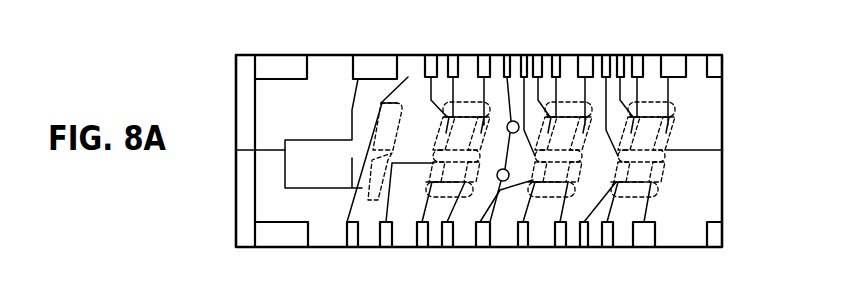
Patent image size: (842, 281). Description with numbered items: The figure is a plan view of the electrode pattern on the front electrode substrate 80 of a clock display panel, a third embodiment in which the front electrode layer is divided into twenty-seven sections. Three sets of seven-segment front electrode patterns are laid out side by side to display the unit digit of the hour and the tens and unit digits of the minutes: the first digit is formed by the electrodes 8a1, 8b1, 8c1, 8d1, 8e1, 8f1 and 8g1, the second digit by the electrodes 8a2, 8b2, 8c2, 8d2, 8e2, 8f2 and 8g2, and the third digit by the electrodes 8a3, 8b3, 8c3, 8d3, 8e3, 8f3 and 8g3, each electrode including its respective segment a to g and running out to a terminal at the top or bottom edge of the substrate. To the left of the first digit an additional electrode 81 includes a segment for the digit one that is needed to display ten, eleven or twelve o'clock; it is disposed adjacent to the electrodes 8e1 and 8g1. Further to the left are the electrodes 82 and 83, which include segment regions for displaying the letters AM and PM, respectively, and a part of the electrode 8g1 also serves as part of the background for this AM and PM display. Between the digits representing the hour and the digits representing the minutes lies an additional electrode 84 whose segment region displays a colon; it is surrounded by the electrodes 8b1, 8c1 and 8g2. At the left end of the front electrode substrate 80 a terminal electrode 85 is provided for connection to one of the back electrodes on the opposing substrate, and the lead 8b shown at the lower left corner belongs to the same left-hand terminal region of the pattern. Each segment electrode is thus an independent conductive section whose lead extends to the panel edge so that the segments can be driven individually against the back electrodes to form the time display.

The front electrode substrate 80 is at (760, 103).
The terminal electrode 85 is at (239, 66).
The common lead 8b is at (245, 233).
The AM display electrode 82 is at (327, 73).
The PM display electrode 83 is at (330, 240).
The additional electrode for digit "1" 81 is at (374, 240).
The colon electrode 84 is at (515, 63).
The segment g electrode of first digit 8g1 is at (405, 77).
The segment f electrode of first digit 8f1 is at (440, 67).
The segment a electrode of first digit 8a1 is at (465, 67).
The segment b electrode of first digit 8b1 is at (496, 67).
The segment e electrode of first digit 8e1 is at (408, 240).
The segment d electrode of first digit 8d1 is at (437, 240).
The segment c electrode of first digit 8c1 is at (468, 240).
The segment g electrode of second digit 8g2 is at (532, 67).
The segment f electrode of second digit 8f2 is at (547, 73).
The segment a electrode of second digit 8a2 is at (582, 72).
The segment b electrode of second digit 8b2 is at (602, 72).
The segment e electrode of second digit 8e2 is at (508, 240).
The segment d electrode of second digit 8d2 is at (545, 240).
The segment c electrode of second digit 8c2 is at (578, 240).
The segment g electrode of third digit 8g3 is at (620, 60).
The segment f electrode of third digit 8f3 is at (632, 68).
The segment a electrode of third digit 8a3 is at (652, 66).
The segment b electrode of third digit 8b3 is at (695, 68).
The segment e electrode of third digit 8e3 is at (600, 242).
The segment d electrode of third digit 8d3 is at (628, 240).
The segment c electrode of third digit 8c3 is at (675, 240).